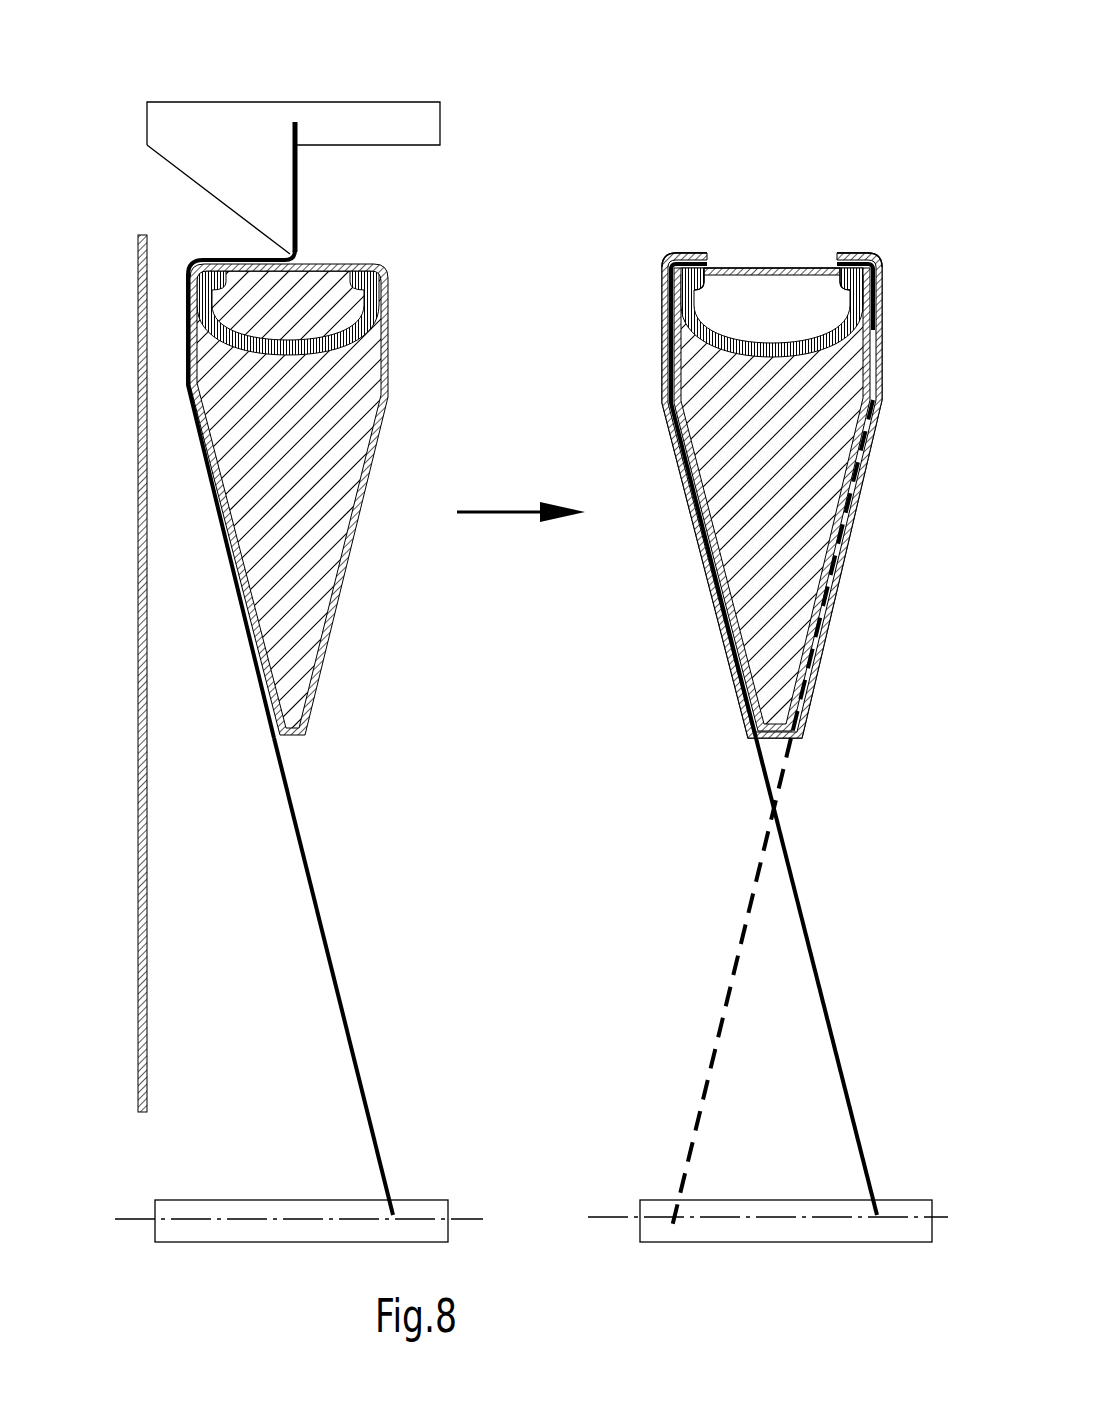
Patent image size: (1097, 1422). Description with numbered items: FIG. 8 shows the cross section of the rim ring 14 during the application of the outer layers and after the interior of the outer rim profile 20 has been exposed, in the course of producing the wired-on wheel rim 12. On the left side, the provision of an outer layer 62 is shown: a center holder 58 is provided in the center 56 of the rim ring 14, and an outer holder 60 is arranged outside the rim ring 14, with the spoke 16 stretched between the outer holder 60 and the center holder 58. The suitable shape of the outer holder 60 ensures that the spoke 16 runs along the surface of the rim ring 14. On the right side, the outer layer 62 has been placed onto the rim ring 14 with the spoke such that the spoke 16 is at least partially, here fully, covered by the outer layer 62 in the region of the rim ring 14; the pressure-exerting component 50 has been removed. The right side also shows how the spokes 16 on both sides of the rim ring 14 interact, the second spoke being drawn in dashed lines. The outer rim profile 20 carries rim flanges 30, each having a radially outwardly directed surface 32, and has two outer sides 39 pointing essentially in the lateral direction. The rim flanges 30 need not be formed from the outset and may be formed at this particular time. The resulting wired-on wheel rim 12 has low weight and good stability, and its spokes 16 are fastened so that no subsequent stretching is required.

The wired-on wheel rim 12 is at (798, 120).
The rim ring 14 is at (350, 640).
The spoke 16 is at (258, 888).
The outer rim profile 20 is at (840, 328).
The rim flange 30 is at (675, 249).
The radially outwardly directed surface 32 is at (717, 247).
The outer side 39 is at (635, 308).
The pressure-exerting component 50 is at (345, 262).
The center 56 is at (123, 1220).
The center holder 58 is at (242, 1198).
The outer holder 60 is at (398, 145).
The outer layer 62 is at (138, 1115).